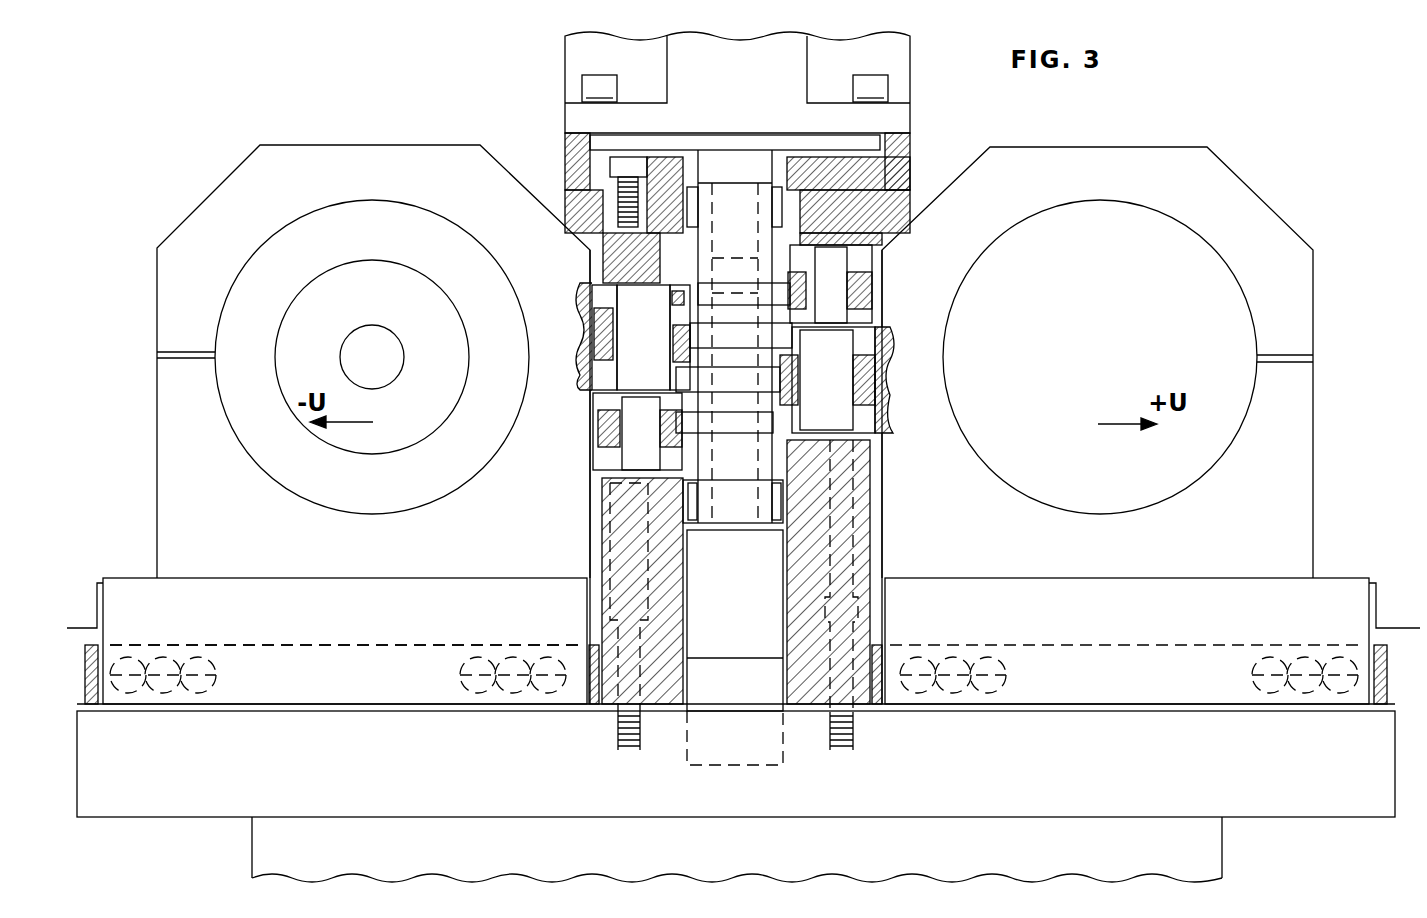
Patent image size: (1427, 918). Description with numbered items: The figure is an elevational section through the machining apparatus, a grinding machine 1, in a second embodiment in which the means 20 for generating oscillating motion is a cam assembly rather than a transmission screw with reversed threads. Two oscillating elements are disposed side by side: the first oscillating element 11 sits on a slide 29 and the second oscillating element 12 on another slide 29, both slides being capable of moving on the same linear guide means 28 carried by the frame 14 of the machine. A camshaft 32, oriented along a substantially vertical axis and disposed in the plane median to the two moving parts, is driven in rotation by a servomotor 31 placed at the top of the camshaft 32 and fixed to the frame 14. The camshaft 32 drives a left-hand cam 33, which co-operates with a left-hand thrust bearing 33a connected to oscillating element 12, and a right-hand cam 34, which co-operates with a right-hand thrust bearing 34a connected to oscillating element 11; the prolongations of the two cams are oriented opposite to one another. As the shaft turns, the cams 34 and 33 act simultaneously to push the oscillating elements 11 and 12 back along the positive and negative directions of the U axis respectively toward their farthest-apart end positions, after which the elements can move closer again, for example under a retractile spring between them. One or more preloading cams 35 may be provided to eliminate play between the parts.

The grinding machine 1 is at (1176, 838).
The first oscillating element 11 is at (1085, 185).
The second oscillating element 12 is at (357, 185).
The frame 14 is at (234, 766).
The means for generating oscillating motion 20 is at (782, 173).
The linear guide means 28 is at (1228, 665).
The slide 29 is at (293, 624).
The servomotor 31 is at (718, 78).
The camshaft 32 is at (710, 198).
The left-hand cam 33 is at (792, 334).
The left-hand thrust bearing 33a is at (665, 338).
The right-hand cam 34 is at (862, 398).
The right-hand thrust bearing 34a is at (880, 382).
The preloading cam 35 is at (808, 290).